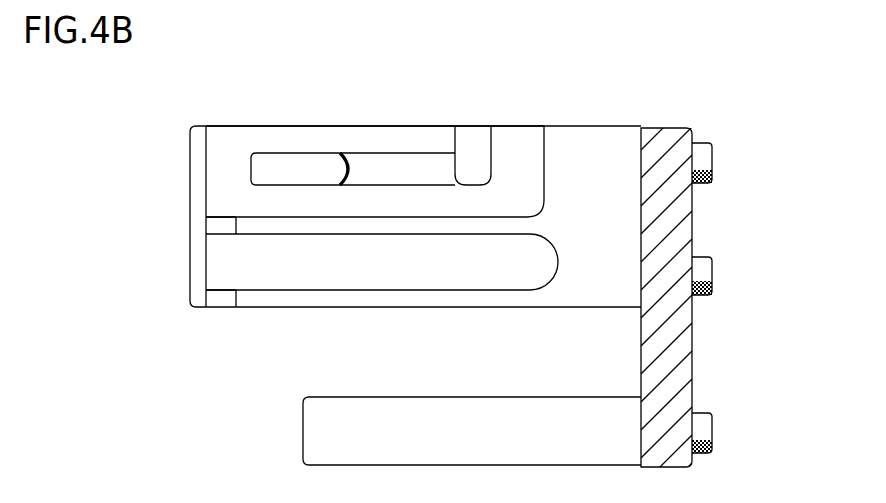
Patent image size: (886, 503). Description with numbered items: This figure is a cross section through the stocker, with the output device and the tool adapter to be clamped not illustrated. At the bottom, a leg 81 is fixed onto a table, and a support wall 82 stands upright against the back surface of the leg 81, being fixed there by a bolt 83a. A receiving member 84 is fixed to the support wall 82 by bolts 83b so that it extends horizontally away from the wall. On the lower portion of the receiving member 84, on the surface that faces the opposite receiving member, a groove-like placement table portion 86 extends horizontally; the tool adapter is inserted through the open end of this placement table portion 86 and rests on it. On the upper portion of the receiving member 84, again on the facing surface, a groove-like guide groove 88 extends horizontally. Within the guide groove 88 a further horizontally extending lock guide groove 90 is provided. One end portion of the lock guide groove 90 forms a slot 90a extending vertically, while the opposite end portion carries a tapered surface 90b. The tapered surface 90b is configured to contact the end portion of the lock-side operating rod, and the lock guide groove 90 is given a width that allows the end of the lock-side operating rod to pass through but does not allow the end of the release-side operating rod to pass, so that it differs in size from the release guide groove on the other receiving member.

The leg 81 is at (303, 430).
The support wall 82 is at (665, 143).
The bolt 83a is at (714, 432).
The bolt 83b is at (714, 163).
The receiving member 84 is at (586, 126).
The placement table portion 86 is at (348, 262).
The guide groove 88 is at (275, 205).
The lock guide groove 90 is at (380, 164).
The slot 90a is at (473, 143).
The tapered surface 90b is at (295, 168).